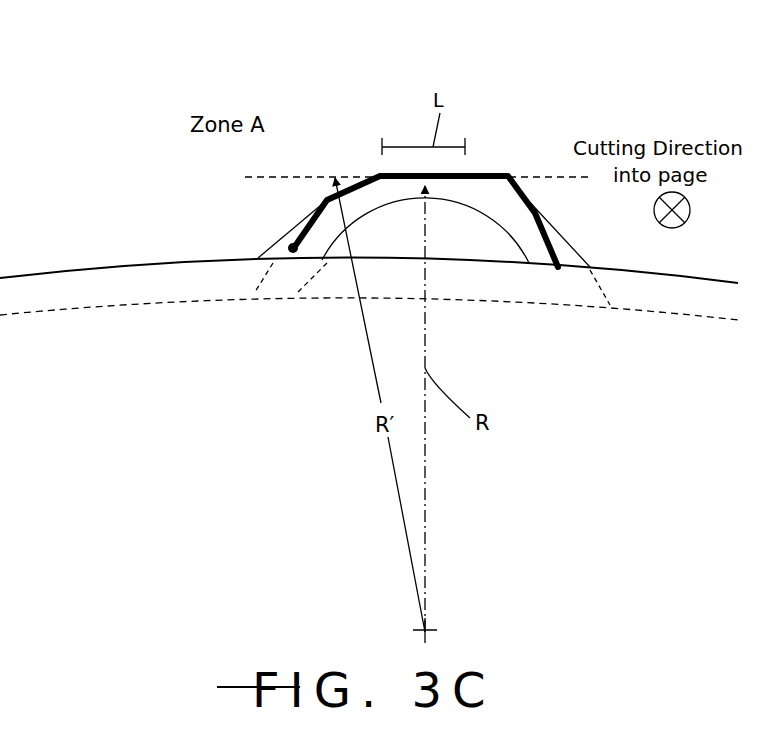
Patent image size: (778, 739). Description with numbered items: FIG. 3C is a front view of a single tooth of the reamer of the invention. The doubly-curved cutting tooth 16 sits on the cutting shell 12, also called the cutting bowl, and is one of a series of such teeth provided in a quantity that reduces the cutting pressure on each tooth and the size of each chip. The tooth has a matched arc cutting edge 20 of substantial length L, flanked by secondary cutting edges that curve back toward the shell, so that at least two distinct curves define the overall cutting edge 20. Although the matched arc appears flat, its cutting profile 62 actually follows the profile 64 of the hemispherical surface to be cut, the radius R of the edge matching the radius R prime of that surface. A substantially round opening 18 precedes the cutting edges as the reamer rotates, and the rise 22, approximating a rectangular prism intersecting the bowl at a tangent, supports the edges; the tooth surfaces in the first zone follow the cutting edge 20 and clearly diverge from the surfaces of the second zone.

The cutting shell 12 is at (122, 296).
The opening 18 is at (524, 278).
The rise 22 is at (408, 218).
The cutting profile 62 is at (393, 180).
The cutting tooth 16 is at (462, 235).
The cutting edge 20 is at (512, 177).
The profile of the shape to be cut 64 is at (292, 173).